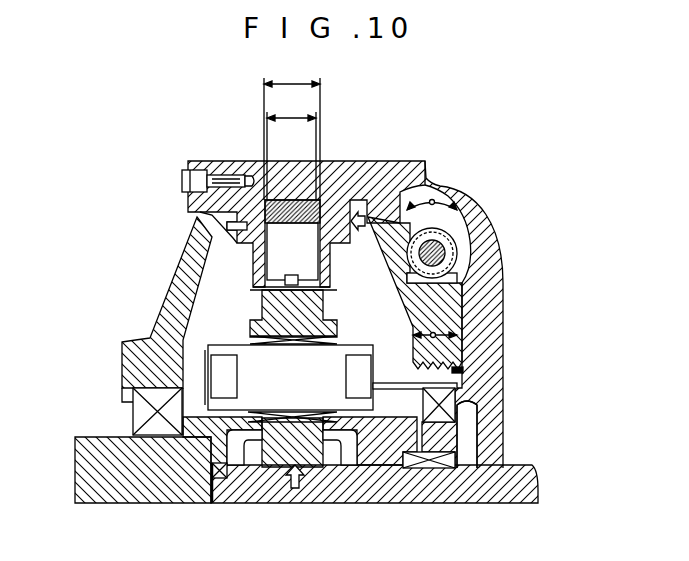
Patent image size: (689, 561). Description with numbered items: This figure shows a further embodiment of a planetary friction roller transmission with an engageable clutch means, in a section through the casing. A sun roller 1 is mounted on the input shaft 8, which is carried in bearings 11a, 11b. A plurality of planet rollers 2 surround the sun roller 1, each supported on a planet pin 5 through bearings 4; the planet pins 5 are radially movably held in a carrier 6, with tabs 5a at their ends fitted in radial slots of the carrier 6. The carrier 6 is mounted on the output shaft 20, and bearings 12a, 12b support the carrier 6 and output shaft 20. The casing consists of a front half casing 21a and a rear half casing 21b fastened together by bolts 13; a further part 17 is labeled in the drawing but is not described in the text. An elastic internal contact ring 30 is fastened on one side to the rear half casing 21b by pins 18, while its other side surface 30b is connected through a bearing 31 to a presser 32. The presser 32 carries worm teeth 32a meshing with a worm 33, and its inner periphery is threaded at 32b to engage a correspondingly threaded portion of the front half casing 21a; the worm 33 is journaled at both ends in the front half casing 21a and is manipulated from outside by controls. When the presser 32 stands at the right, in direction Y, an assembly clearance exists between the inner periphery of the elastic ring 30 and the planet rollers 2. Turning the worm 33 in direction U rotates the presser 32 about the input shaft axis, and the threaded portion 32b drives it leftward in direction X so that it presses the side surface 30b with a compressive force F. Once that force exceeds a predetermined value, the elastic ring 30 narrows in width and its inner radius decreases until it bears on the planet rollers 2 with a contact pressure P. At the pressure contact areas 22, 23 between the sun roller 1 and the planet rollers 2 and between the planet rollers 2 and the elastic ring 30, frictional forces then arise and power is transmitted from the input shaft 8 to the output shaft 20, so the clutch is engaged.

The sun roller 1 is at (320, 470).
The planet roller 2 is at (268, 468).
The bearing 4 is at (168, 310).
The planet pin 5 is at (245, 378).
The tab 5a is at (458, 385).
The carrier 6 is at (210, 423).
The input shaft 8 is at (483, 490).
The bearing 11a is at (428, 468).
The bearing 11b is at (223, 465).
The bearing 12a is at (480, 414).
The bearing 12b is at (147, 413).
The bolt 13 is at (182, 181).
The piston bore 17 is at (265, 162).
The pin 18 is at (200, 227).
The output shaft 20 is at (115, 465).
The front half casing 21a is at (488, 322).
The rear half casing 21b is at (205, 165).
The pressure contact area 22 is at (238, 470).
The pressure contact area 23 is at (267, 290).
The elastic internal contact ring 30 is at (242, 213).
The side surface 30b is at (325, 200).
The bearing 31 is at (358, 200).
The presser 32 is at (440, 307).
The worm teeth 32a is at (440, 256).
The threaded portion 32b is at (460, 375).
The worm 33 is at (481, 227).